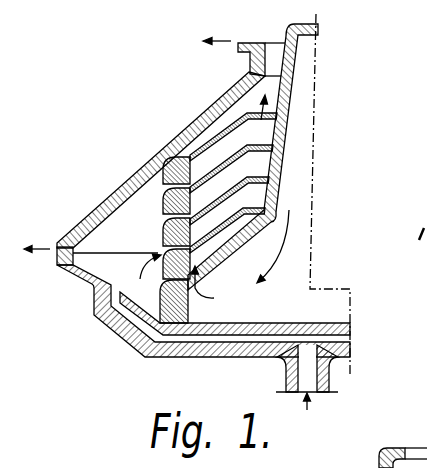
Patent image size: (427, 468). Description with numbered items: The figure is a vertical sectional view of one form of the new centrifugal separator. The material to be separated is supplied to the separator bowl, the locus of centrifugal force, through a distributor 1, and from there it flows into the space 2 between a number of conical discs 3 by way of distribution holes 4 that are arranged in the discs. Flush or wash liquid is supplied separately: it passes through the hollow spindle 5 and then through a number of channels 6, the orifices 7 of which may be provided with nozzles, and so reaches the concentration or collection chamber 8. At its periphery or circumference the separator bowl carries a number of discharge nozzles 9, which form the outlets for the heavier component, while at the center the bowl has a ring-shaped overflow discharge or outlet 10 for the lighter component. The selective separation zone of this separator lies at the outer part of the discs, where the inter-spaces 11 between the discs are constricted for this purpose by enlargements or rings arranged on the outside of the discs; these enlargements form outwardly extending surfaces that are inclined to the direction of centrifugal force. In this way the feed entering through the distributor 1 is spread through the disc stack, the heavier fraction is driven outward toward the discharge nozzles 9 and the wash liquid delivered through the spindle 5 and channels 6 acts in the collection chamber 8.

The distributor 1 is at (286, 123).
The space 2 is at (234, 168).
The conical discs 3 is at (218, 108).
The distribution holes 4 is at (186, 160).
The hollow spindle 5 is at (290, 373).
The channels 6 is at (180, 339).
The orifices 7 is at (96, 312).
The concentration or collection chamber 8 is at (120, 243).
The discharge nozzles 9 is at (60, 256).
The ring-shaped overflow discharge or outlet 10 is at (278, 52).
The inter-spaces 11 is at (163, 205).